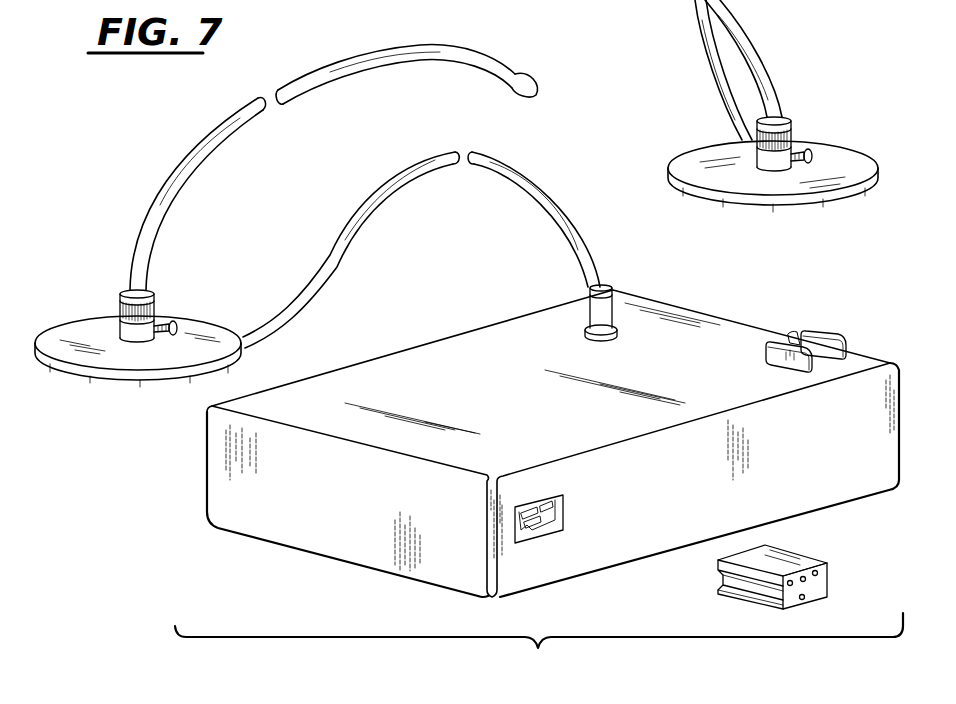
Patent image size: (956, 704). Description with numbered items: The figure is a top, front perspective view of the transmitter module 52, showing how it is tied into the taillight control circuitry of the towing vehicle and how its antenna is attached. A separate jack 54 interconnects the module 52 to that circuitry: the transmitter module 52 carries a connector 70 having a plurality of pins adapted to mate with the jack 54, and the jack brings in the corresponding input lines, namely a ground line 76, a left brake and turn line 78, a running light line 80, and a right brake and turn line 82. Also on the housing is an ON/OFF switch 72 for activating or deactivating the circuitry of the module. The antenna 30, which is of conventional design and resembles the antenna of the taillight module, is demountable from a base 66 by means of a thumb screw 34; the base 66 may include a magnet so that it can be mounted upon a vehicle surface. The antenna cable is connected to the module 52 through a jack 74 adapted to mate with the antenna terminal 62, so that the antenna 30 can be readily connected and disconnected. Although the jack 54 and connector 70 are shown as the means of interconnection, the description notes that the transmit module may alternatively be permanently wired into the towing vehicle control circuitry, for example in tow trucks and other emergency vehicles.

The antenna 30 is at (213, 138).
The thumb screw 34 is at (178, 328).
The transmitter module 52 is at (330, 538).
The jack 54 is at (752, 585).
The antenna terminal 62 is at (577, 323).
The base 66 is at (148, 352).
The connector 70 is at (563, 532).
The ON/OFF switch 72 is at (796, 338).
The jack 74 is at (595, 307).
The ground line 76 is at (800, 592).
The left brake and turn line 78 is at (808, 598).
The running light line 80 is at (815, 580).
The right brake and turn line 82 is at (820, 575).